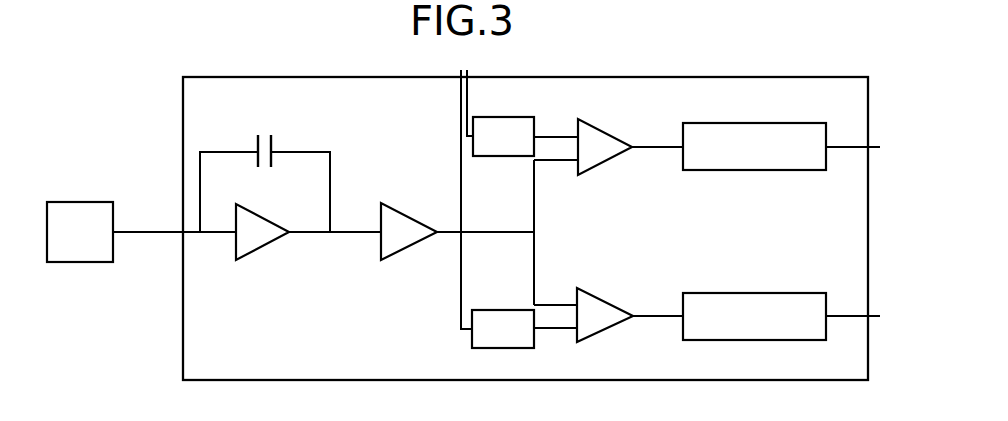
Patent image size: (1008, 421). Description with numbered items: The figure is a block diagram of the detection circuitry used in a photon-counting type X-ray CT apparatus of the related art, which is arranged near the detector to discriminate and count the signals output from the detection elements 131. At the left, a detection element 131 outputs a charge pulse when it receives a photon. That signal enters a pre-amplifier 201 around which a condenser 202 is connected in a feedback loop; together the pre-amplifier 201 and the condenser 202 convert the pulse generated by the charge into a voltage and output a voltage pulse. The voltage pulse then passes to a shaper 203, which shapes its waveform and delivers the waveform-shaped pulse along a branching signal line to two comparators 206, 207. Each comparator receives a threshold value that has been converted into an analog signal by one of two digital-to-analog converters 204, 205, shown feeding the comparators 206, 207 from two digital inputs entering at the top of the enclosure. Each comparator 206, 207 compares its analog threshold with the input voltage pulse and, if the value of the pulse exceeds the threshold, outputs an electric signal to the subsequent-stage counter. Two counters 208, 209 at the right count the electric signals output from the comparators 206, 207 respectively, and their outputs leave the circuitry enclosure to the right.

The detection element 131 is at (77, 202).
The pre-amplifier 201 is at (263, 247).
The condenser 202 is at (291, 132).
The shaper 203 is at (392, 255).
The digital-to-analog converter 204 is at (505, 157).
The digital-to-analog converter 205 is at (505, 309).
The comparator 206 is at (610, 158).
The comparator 207 is at (613, 305).
The counter 208 is at (722, 171).
The counter 209 is at (722, 292).